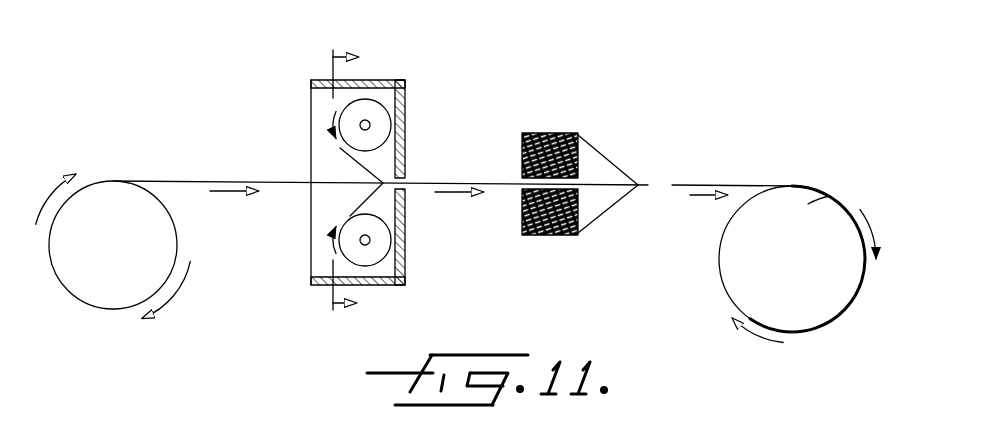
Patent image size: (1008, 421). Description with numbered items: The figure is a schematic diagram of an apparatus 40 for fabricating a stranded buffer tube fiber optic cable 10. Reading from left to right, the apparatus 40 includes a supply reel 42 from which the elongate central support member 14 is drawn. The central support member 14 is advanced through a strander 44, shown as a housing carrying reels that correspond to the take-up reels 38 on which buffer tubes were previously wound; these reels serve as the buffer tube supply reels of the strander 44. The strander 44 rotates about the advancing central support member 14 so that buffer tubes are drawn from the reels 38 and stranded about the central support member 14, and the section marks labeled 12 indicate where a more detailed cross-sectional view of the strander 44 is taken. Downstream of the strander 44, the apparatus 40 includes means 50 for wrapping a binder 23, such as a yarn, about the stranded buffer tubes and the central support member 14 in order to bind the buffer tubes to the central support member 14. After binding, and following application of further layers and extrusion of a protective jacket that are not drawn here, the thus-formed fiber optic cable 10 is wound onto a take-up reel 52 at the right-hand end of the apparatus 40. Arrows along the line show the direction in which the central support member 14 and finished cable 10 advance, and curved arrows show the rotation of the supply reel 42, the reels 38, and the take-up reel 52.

The fiber optic cable 10 is at (735, 186).
The section line 12 is at (321, 184).
The elongate central support member 14 is at (220, 157).
The binder 23 is at (601, 151).
The take-up reels 38 is at (372, 114).
The apparatus 40 is at (632, 74).
The supply reel 42 is at (102, 296).
The strander 44 is at (382, 286).
The means for wrapping a binder 50 is at (533, 228).
The take-up reel 52 is at (808, 204).